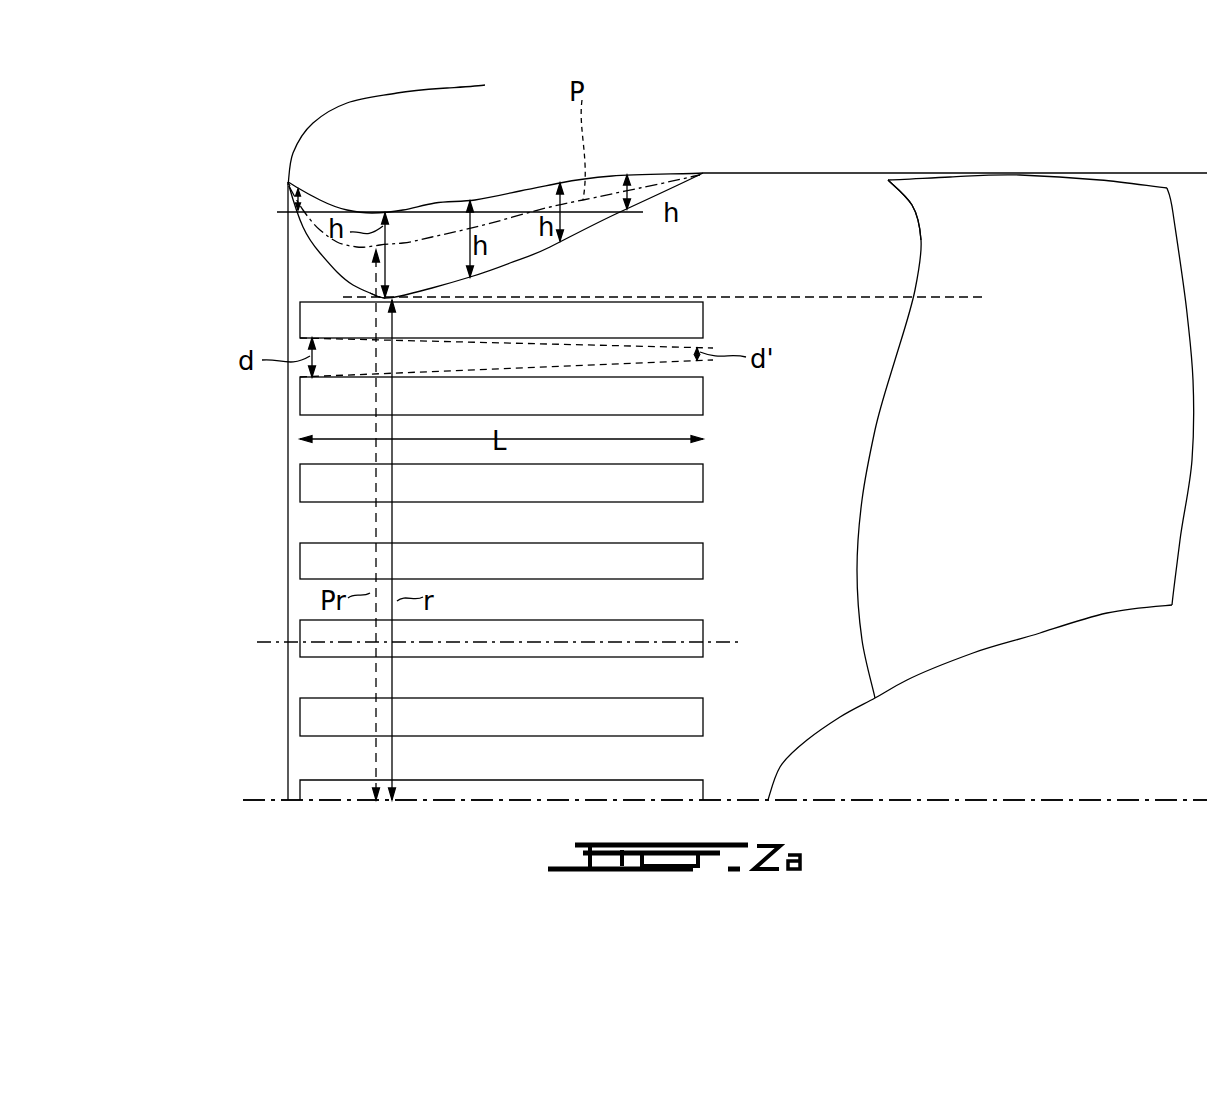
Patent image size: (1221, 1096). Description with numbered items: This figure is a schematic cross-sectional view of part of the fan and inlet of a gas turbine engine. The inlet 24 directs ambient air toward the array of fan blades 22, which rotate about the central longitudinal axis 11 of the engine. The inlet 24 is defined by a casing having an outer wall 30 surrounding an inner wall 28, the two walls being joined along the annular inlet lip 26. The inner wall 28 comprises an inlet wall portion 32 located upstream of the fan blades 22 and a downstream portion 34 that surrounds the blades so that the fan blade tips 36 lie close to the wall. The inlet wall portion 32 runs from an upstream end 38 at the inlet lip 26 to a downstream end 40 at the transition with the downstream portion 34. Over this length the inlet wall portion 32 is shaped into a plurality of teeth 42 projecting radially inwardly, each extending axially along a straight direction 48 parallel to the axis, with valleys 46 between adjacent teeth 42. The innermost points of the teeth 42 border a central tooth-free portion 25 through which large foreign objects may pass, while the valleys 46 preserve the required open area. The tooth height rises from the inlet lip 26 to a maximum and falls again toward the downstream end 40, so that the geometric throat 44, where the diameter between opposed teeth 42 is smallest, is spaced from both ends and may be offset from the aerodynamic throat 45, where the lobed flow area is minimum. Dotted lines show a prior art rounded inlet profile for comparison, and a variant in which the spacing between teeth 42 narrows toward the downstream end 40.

The central longitudinal axis of the engine 11 is at (1142, 800).
The fan blade 22 is at (1092, 225).
The inlet 24 is at (185, 473).
The central tooth-free portion 25 is at (288, 593).
The inlet lip 26 is at (288, 183).
The inner wall 28 is at (662, 168).
The outer wall 30 is at (447, 88).
The inlet wall portion 32 is at (612, 175).
The downstream portion 34 is at (933, 173).
The fan blade tip 36 is at (910, 187).
The upstream end 38 is at (287, 198).
The downstream end 40 is at (738, 173).
The teeth 42 is at (585, 222).
The geometric throat 44 is at (393, 300).
The aerodynamic throat 45 is at (380, 298).
The valleys 46 is at (680, 598).
The straight direction 48 is at (742, 640).